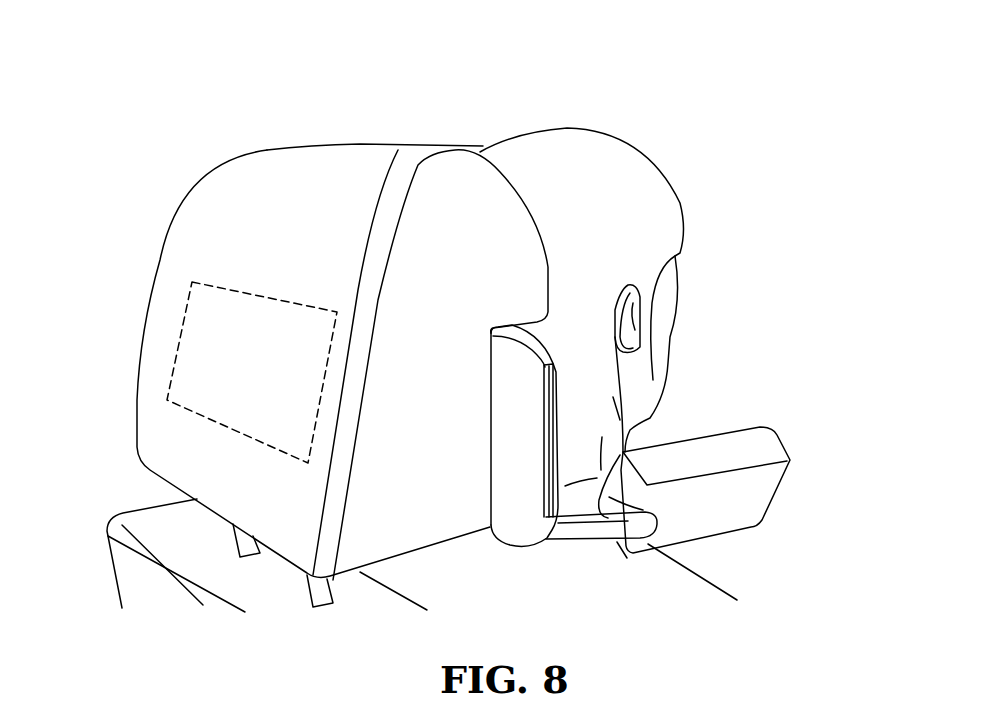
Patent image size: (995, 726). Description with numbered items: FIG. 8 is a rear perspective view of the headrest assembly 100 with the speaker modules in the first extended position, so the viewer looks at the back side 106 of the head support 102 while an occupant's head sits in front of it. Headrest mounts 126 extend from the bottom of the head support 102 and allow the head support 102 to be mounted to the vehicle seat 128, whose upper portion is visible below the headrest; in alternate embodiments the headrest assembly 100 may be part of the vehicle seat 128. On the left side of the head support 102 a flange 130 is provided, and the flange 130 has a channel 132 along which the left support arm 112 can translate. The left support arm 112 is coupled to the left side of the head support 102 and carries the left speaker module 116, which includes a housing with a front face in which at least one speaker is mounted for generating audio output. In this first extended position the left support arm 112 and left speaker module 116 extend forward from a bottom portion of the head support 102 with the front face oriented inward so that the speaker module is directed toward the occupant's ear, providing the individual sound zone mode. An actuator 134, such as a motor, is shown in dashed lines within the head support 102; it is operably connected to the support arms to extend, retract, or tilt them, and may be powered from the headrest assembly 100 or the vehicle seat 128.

The headrest assembly 100 is at (210, 122).
The head support 102 is at (190, 264).
The back side 106 is at (253, 205).
The left support arm 112 is at (597, 540).
The left speaker module 116 is at (743, 427).
The headrest mounts 126 is at (308, 590).
The vehicle seat 128 is at (170, 580).
The flange 130 is at (519, 472).
The channel 132 is at (553, 409).
The actuator 134 is at (173, 357).